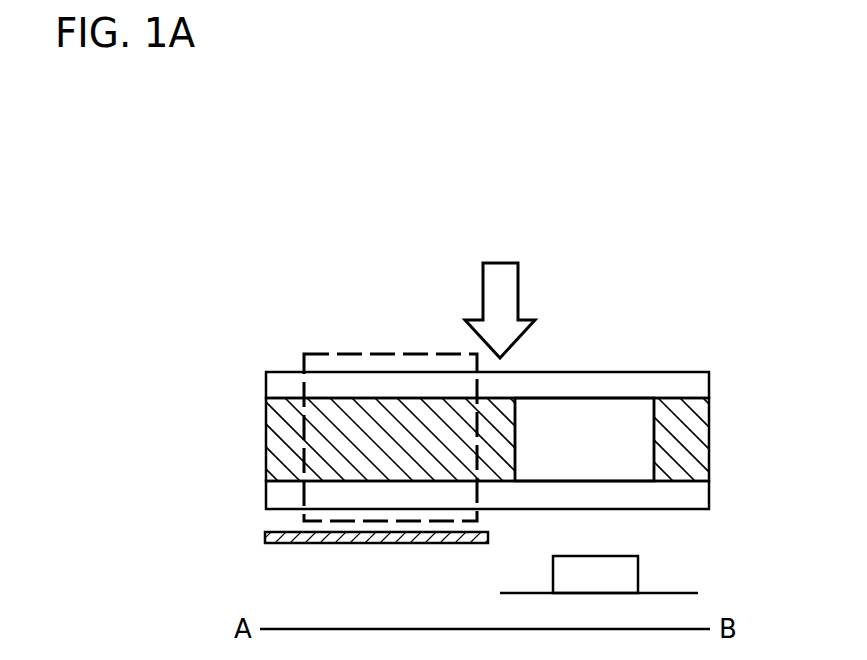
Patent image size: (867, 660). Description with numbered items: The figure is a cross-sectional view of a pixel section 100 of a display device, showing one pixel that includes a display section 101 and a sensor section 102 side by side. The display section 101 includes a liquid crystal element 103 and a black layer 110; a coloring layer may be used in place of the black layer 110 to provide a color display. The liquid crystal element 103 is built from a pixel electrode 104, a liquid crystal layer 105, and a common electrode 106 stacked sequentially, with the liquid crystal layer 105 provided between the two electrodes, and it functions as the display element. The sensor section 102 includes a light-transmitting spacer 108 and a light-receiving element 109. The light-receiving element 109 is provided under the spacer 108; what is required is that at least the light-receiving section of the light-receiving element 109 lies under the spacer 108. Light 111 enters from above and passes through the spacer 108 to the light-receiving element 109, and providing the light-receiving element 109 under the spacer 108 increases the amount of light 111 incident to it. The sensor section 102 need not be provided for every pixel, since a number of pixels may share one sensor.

The pixel section 100 is at (708, 149).
The display section 101 is at (485, 229).
The sensor section 102 is at (508, 229).
The liquid crystal element 103 is at (407, 354).
The pixel electrode 104 is at (275, 495).
The liquid crystal layer 105 is at (282, 443).
The common electrode 106 is at (280, 389).
The light-transmitting spacer 108 is at (612, 410).
The light-receiving element 109 is at (632, 580).
The black layer 110 is at (265, 536).
The light 111 is at (503, 293).